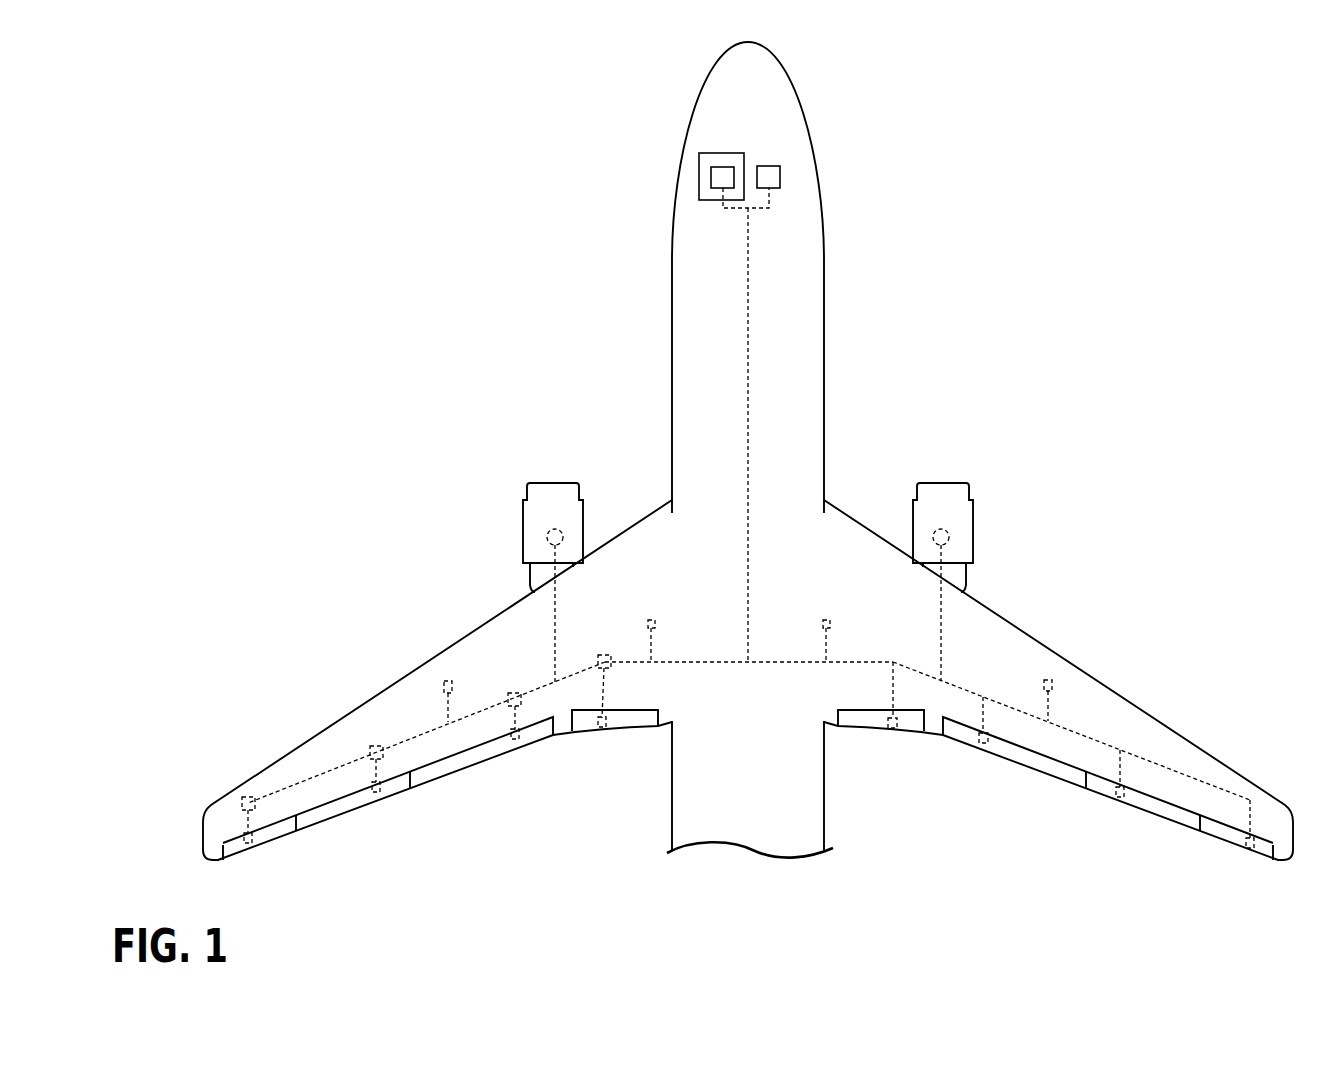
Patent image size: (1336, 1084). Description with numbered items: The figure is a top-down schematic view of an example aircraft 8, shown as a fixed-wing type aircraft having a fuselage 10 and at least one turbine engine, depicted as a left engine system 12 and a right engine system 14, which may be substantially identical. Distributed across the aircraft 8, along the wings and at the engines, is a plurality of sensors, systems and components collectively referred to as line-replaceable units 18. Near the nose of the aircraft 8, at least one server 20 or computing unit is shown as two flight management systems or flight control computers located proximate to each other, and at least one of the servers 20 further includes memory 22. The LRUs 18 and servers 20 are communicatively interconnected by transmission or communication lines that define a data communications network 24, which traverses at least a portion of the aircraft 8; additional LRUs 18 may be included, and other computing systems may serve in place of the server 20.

The aircraft 8 is at (569, 74).
The fuselage 10 is at (828, 372).
The left engine system 12 is at (552, 491).
The right engine system 14 is at (958, 495).
The line-replaceable units 18 is at (751, 688).
The server 20 is at (700, 195).
The memory 22 is at (721, 164).
The data communications network 24 is at (746, 372).